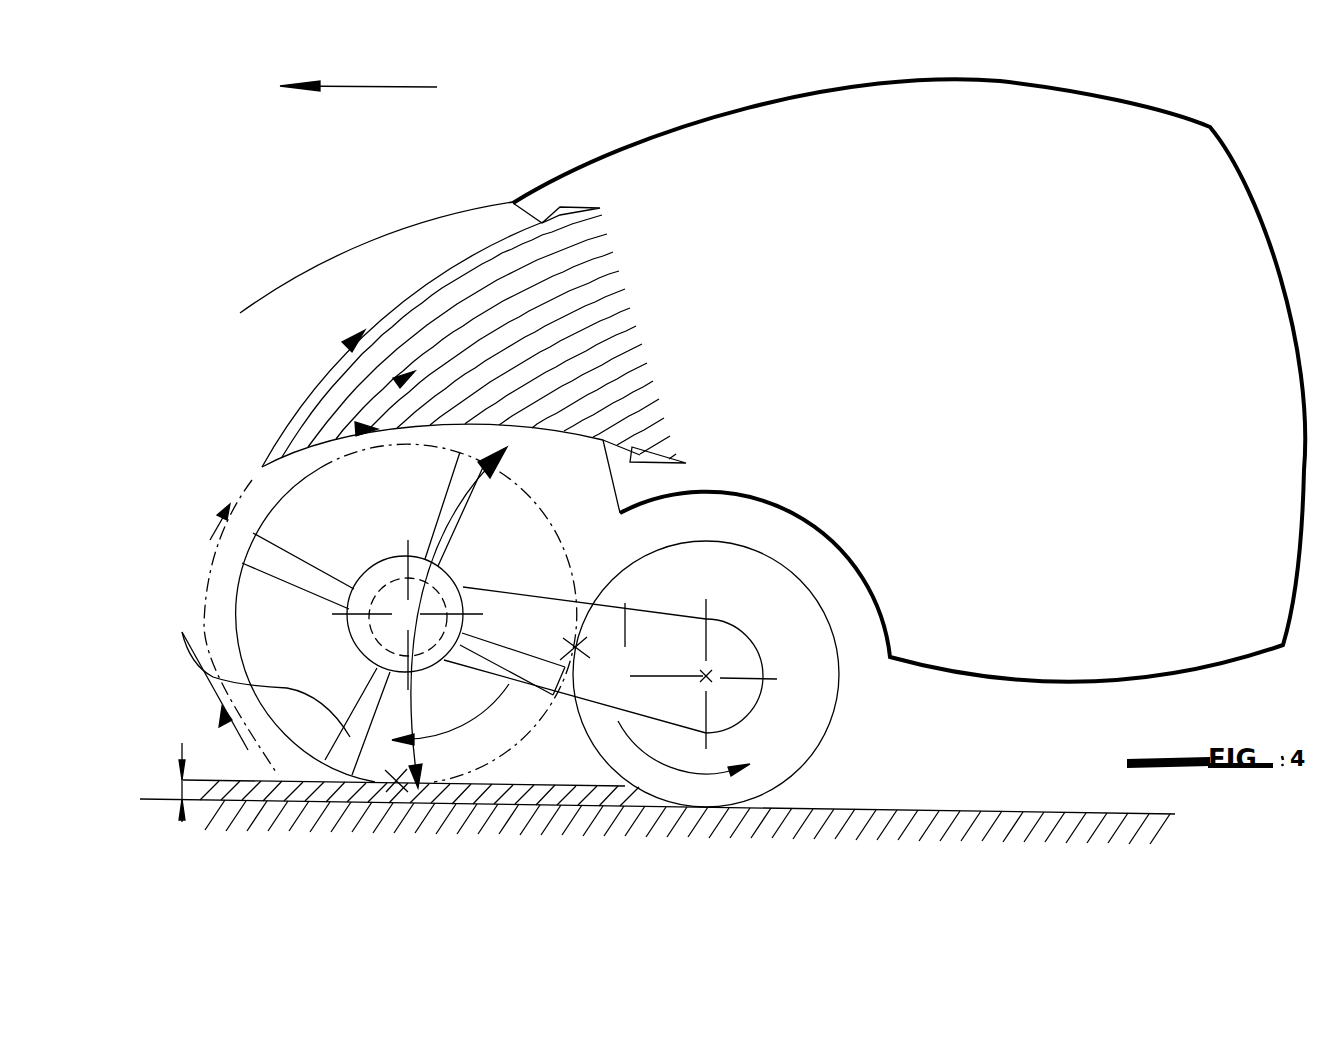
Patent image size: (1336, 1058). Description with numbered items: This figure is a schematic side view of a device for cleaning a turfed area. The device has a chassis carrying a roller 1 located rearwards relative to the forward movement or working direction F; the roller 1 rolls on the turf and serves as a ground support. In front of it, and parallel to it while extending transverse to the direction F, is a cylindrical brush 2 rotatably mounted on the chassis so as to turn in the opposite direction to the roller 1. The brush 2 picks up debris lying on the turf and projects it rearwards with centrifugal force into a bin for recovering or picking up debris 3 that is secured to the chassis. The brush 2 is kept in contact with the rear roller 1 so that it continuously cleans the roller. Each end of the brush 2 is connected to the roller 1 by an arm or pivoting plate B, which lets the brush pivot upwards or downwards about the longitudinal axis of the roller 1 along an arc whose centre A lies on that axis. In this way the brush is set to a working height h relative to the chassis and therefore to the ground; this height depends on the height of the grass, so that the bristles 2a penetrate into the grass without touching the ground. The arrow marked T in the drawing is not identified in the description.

The roller 1 is at (810, 725).
The cylindrical brush 2 is at (232, 535).
The bristles 2a is at (298, 570).
The bin for recovering or picking up debris 3 is at (990, 335).
The centre of the arc path A is at (707, 674).
The arm or pivoting plate B is at (627, 605).
The rotation direction T is at (453, 503).
The forward movement or working direction F is at (358, 87).
The working height h is at (182, 752).